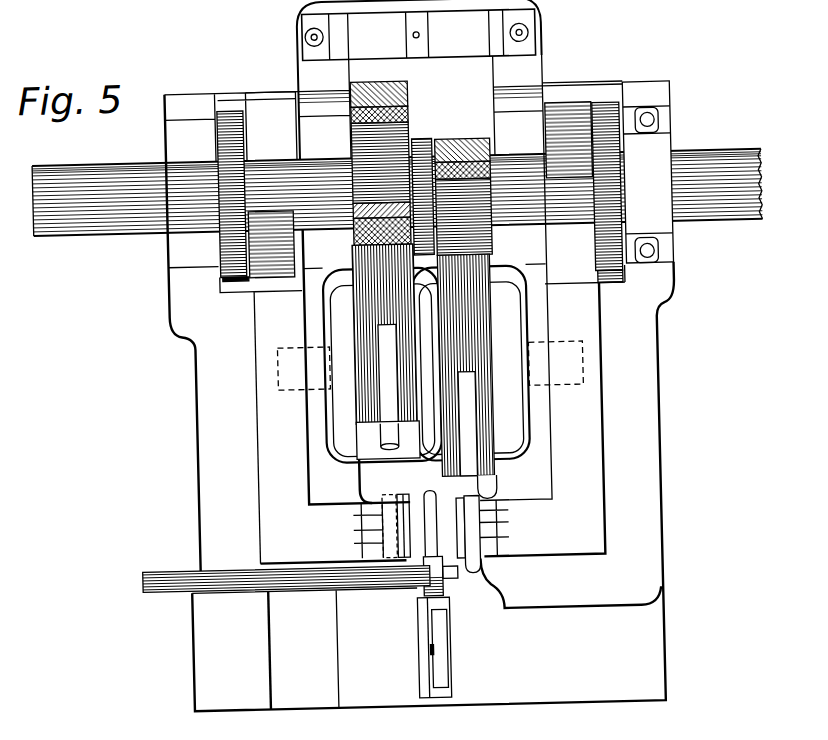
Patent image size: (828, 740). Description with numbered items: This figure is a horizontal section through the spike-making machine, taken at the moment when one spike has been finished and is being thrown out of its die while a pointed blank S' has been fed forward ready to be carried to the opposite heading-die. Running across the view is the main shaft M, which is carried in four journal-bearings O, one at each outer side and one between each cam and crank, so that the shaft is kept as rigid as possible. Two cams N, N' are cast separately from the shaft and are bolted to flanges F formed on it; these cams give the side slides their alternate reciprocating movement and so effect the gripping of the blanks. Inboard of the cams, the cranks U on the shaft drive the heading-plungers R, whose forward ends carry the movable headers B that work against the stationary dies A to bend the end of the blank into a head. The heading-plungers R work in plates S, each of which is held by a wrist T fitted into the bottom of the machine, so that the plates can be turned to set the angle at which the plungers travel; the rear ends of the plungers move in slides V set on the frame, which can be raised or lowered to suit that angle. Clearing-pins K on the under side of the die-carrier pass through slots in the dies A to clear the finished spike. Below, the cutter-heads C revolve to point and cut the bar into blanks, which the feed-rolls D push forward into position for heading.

The main shaft M is at (397, 192).
The cam N is at (256, 196).
The second collar / hub on shaft N' is at (584, 192).
The journal-bearing O is at (427, 162).
The flange F is at (447, 141).
The slide V is at (420, 80).
The crank U is at (421, 168).
The heading-plunger R is at (423, 360).
The plate S is at (428, 412).
The pointed blank S' is at (451, 543).
The movable header B is at (426, 460).
The wrist T is at (427, 366).
The clearing-pin K is at (429, 529).
The stationary die A is at (428, 530).
The feed-roll D is at (418, 586).
The cutter-head C is at (443, 647).